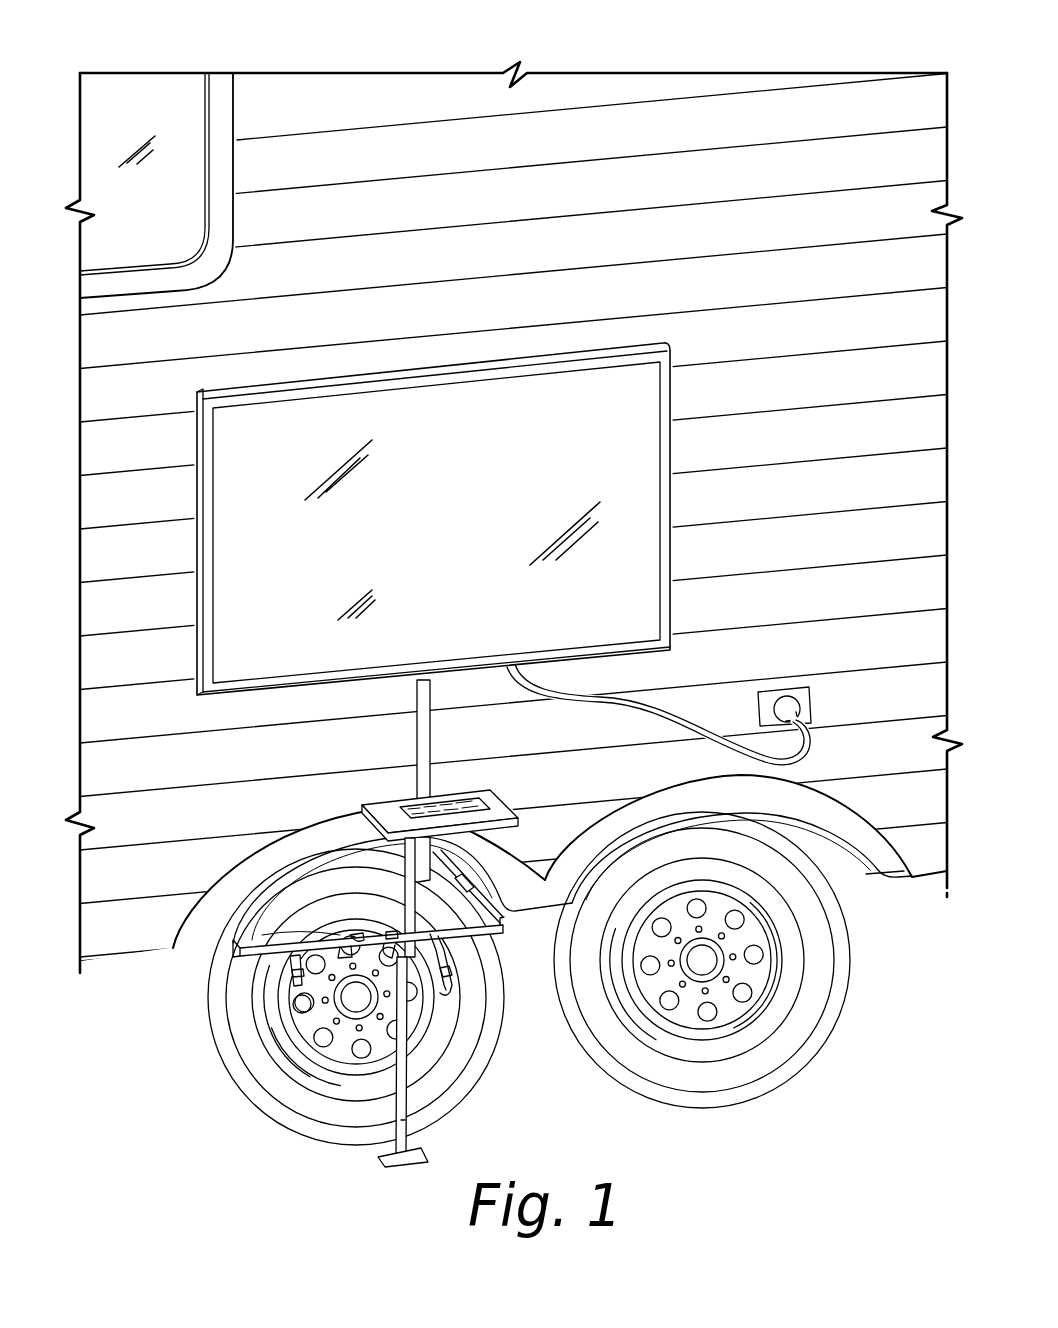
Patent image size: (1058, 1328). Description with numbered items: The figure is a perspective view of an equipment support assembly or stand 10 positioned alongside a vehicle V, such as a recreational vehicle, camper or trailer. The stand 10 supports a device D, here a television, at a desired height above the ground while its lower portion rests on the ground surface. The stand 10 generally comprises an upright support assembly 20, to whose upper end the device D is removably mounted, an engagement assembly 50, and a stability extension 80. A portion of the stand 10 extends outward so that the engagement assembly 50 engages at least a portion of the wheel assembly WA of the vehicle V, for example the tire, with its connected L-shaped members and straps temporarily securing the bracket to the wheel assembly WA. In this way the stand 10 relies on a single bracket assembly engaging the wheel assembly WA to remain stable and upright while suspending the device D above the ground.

The vehicle V is at (742, 120).
The equipment support assembly 10 is at (278, 924).
The upright support 20 is at (376, 752).
The device D is at (449, 532).
The engagement assembly 50 is at (242, 972).
The stability extension 80 is at (378, 1082).
The wheel assembly WA is at (508, 1064).